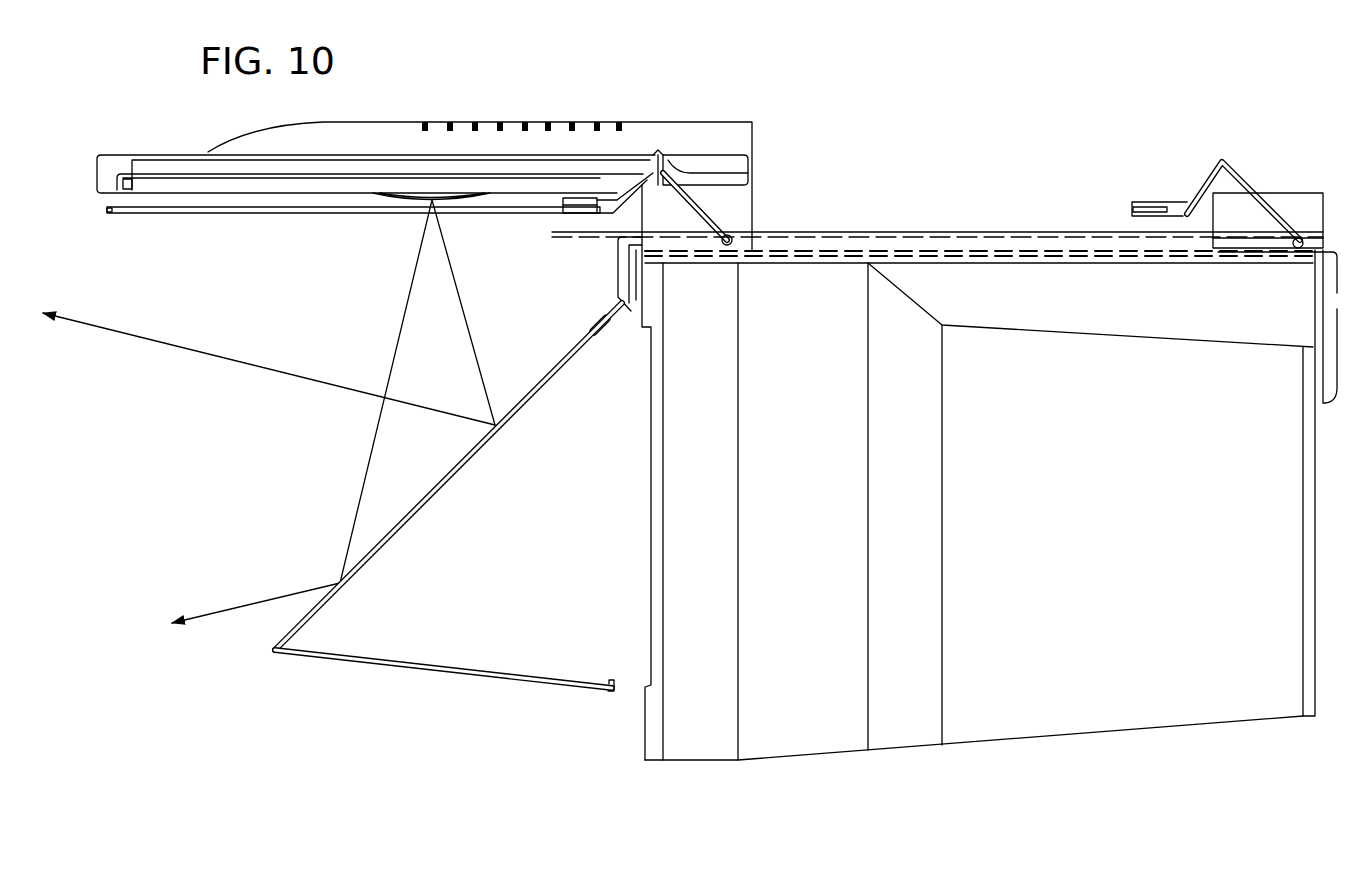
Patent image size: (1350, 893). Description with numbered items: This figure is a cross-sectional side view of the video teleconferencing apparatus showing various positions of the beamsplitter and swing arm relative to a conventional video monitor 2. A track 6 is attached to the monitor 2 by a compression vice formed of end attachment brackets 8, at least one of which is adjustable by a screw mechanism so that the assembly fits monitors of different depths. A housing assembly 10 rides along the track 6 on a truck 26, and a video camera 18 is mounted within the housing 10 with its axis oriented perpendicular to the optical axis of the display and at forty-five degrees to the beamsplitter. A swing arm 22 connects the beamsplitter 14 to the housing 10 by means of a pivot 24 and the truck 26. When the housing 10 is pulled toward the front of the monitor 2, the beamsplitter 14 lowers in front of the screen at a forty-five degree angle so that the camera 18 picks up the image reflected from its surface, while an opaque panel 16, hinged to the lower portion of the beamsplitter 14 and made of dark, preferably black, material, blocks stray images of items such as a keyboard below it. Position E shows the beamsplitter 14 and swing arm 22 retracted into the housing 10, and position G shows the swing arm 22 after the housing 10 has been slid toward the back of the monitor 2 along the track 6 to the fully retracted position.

The video monitor 2 is at (1070, 670).
The track 6 is at (990, 230).
The attachment brackets 8 is at (642, 289).
The housing assembly 10 is at (512, 110).
The beamsplitter 14 is at (448, 498).
The opaque panel 16 is at (475, 690).
The video camera 18 is at (418, 170).
The swing arm 22 is at (712, 212).
The pivot 24 is at (738, 236).
The truck 26 is at (1290, 175).
The position E is at (208, 213).
The position G is at (1216, 150).